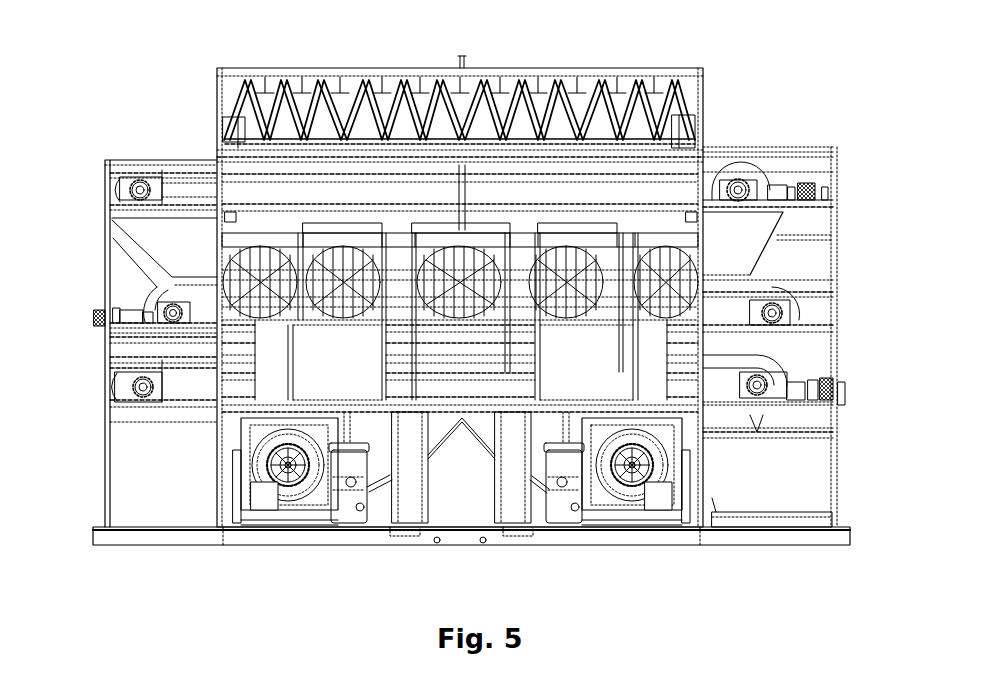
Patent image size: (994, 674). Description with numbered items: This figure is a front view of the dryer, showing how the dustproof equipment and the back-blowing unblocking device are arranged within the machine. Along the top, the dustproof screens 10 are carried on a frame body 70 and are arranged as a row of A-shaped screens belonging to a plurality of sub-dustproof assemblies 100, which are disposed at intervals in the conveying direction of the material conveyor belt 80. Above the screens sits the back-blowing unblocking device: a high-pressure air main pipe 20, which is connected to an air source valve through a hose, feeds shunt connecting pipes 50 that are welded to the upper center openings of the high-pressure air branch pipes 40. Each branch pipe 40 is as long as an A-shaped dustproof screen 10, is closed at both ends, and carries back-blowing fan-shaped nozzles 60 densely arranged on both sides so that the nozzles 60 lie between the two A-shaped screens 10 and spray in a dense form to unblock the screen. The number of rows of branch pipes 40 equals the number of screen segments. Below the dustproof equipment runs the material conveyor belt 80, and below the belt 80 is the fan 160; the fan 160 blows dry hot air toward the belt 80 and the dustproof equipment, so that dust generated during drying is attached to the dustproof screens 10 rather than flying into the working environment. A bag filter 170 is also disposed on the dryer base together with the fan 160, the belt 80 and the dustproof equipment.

The dustproof screen 10 is at (366, 92).
The high-pressure air main pipe 20 is at (463, 62).
The high-pressure air branch pipes 40 is at (387, 93).
The shunt connecting pipes 50 is at (302, 78).
The back-blowing fan-shaped nozzles 60 is at (588, 90).
The frame body 70 is at (704, 96).
The material conveyor belt 80 is at (118, 247).
The sub-dustproof assemblies 100 is at (673, 90).
The fan 160 is at (313, 472).
The bag filter 170 is at (655, 278).